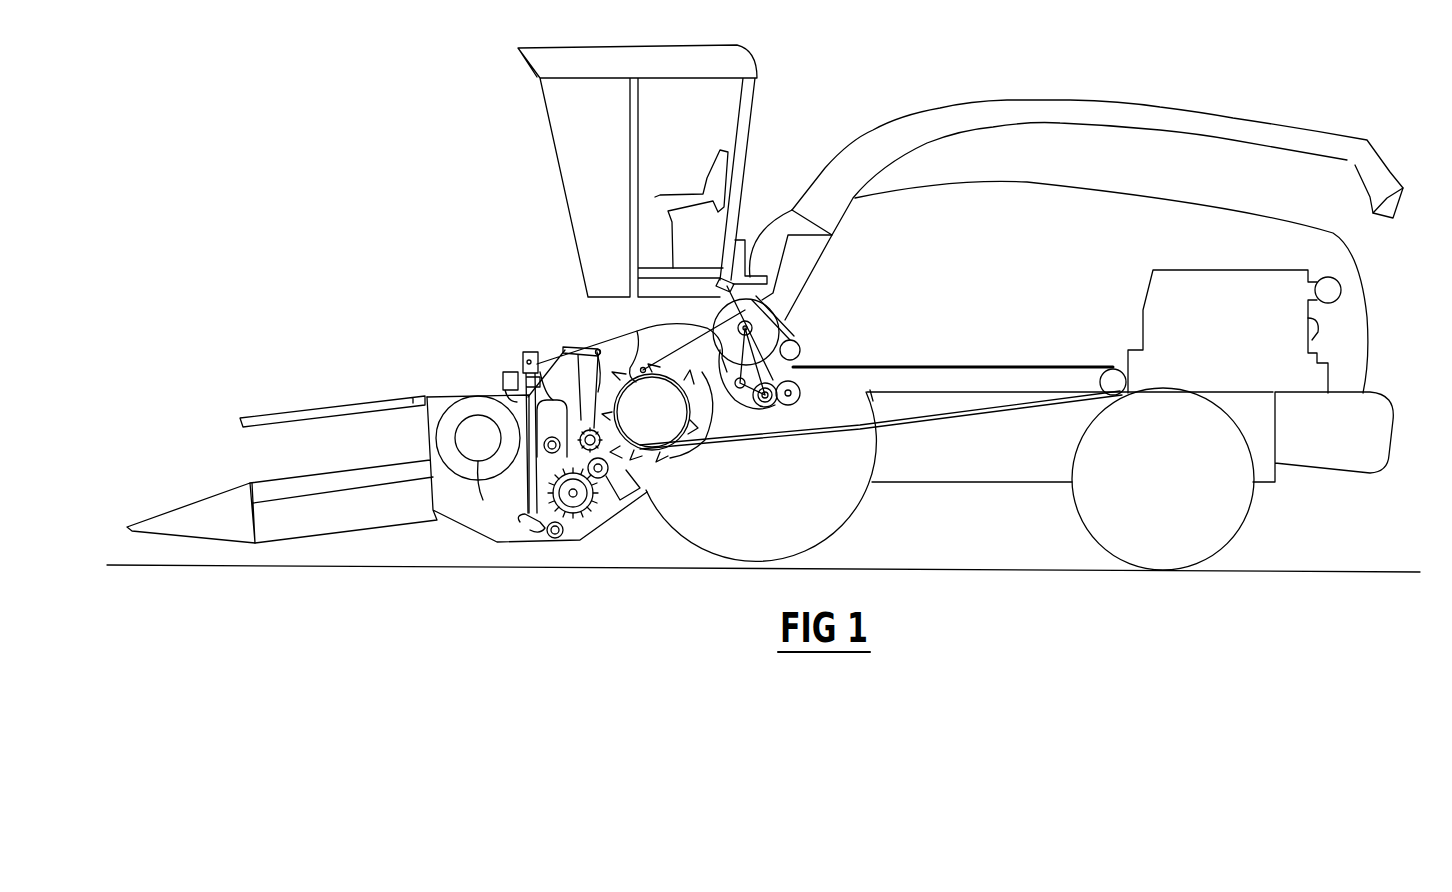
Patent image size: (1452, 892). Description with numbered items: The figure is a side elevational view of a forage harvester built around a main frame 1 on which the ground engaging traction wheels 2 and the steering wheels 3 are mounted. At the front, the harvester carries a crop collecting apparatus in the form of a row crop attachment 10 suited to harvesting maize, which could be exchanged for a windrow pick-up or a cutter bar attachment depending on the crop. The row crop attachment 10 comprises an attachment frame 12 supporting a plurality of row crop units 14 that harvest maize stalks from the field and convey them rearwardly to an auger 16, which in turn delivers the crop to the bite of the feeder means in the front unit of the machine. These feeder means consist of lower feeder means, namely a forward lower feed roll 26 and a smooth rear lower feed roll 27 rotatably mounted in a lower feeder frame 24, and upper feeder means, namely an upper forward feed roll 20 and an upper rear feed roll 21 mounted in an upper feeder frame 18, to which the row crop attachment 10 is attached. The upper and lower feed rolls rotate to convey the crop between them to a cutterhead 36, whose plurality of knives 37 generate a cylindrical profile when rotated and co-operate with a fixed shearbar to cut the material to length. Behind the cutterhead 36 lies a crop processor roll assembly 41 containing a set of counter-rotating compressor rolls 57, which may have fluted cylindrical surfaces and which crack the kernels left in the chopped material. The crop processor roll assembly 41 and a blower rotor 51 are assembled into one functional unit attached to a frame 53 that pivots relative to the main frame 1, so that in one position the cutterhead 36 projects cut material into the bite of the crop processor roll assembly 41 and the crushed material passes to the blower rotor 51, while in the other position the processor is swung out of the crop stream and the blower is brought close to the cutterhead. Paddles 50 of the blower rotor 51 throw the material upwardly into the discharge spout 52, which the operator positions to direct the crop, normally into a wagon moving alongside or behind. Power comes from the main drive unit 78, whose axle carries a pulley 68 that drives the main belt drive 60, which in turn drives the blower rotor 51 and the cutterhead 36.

The main frame 1 is at (949, 494).
The ground engaging traction wheels 2 is at (727, 553).
The steering wheels 3 is at (1237, 523).
The row crop attachment 10 is at (342, 392).
The attachment frame 12 is at (483, 520).
The row crop units 14 is at (307, 517).
The auger 16 is at (467, 410).
The upper feeder frame 18 is at (558, 352).
The upper forward feed roll 20 is at (557, 428).
The upper rear feed roll 21 is at (587, 348).
The lower feeder frame 24 is at (587, 544).
The forward lower feed roll 26 is at (570, 507).
The rear lower feed roll 27 is at (598, 477).
The cutterhead 36 is at (623, 363).
The knives 37 is at (633, 353).
The crop processor roll assembly 41 is at (767, 407).
The paddles 50 is at (732, 312).
The blower rotor 51 is at (793, 313).
The discharge spout 52 is at (1062, 103).
The frame 53 is at (779, 377).
The compressor rolls 57 is at (747, 393).
The main belt drive 60 is at (968, 366).
The pulley 68 is at (1112, 372).
The main drive unit 78 is at (1195, 277).